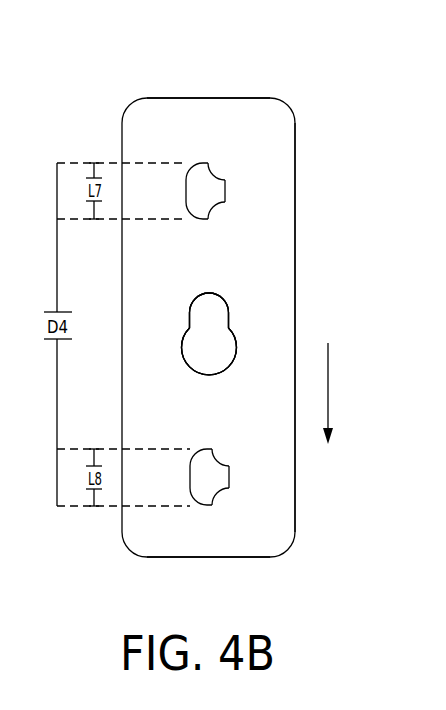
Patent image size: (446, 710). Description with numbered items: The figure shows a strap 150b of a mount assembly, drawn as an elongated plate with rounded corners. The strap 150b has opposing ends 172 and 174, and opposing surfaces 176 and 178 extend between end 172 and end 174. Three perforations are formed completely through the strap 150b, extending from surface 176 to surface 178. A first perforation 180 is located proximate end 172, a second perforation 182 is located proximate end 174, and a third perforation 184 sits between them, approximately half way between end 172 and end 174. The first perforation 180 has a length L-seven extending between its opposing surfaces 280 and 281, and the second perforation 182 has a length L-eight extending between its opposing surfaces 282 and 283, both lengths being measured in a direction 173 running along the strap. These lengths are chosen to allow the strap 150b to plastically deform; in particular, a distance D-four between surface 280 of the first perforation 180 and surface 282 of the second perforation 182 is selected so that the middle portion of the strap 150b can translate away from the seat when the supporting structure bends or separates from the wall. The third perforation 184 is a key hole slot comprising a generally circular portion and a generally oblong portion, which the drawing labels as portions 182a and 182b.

The strap 150b is at (300, 64).
The end 172 is at (180, 98).
The end 174 is at (210, 557).
The surface 176 is at (223, 281).
The surface 178 is at (306, 165).
The direction 173 is at (325, 378).
The first perforation 180 is at (198, 191).
The second perforation 182 is at (203, 476).
The third perforation 184 is at (232, 320).
The lower portion of aperture 182a is at (173, 372).
The upper portion of aperture 182b is at (173, 293).
The surface of first perforation 280 is at (224, 176).
The surface of first perforation 281 is at (224, 205).
The surface of second perforation 282 is at (229, 491).
The surface of second perforation 283 is at (229, 458).